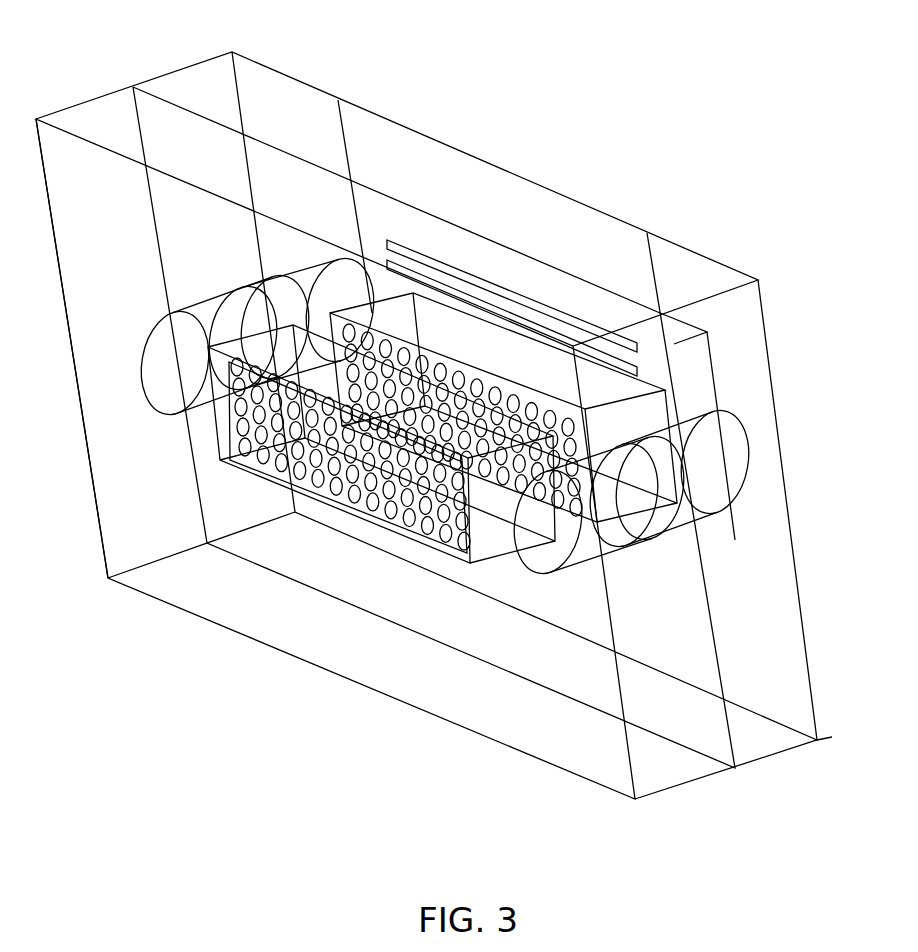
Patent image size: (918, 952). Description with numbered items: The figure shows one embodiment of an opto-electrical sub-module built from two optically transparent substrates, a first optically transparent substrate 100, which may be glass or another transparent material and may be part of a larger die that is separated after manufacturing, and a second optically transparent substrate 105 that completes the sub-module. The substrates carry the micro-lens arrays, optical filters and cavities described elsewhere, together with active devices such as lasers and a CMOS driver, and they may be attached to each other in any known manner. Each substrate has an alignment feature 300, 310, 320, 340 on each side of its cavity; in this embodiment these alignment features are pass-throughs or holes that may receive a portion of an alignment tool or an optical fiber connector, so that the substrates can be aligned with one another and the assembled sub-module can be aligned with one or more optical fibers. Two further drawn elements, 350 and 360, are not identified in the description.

The optically transparent substrate 100 is at (253, 85).
The optically transparent substrate 105 is at (90, 248).
The alignment feature 300 is at (738, 468).
The alignment feature 310 is at (290, 277).
The alignment feature 320 is at (141, 371).
The alignment feature 340 is at (550, 548).
The front perforated panel 350 is at (381, 444).
The rear perforated panel 360 is at (503, 407).